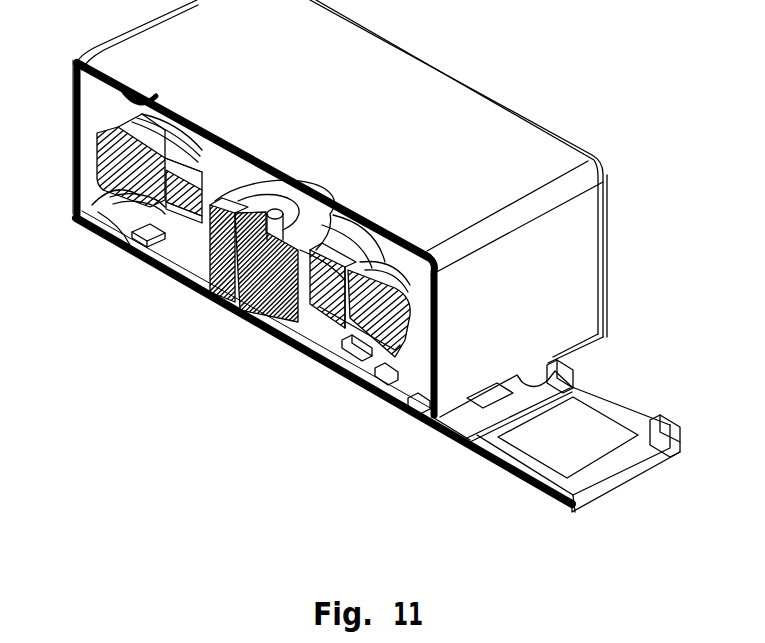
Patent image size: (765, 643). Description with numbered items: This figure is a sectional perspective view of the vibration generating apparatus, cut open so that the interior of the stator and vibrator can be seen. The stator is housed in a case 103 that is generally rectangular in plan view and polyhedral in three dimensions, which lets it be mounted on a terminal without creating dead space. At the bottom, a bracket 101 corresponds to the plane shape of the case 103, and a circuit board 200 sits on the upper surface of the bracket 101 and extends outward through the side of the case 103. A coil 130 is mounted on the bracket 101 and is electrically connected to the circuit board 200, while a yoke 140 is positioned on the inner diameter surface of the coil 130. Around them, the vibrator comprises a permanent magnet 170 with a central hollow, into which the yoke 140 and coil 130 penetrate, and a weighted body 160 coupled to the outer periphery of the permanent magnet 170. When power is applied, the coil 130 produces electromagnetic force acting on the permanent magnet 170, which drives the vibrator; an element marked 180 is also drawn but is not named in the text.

The bracket 101 is at (487, 465).
The case 103 is at (410, 70).
The coil 130 is at (217, 297).
The yoke 140 is at (247, 313).
The weighted body 160 is at (120, 193).
The permanent magnet 170 is at (180, 223).
The rotor / armature ring 180 is at (200, 160).
The circuit board 200 is at (580, 423).